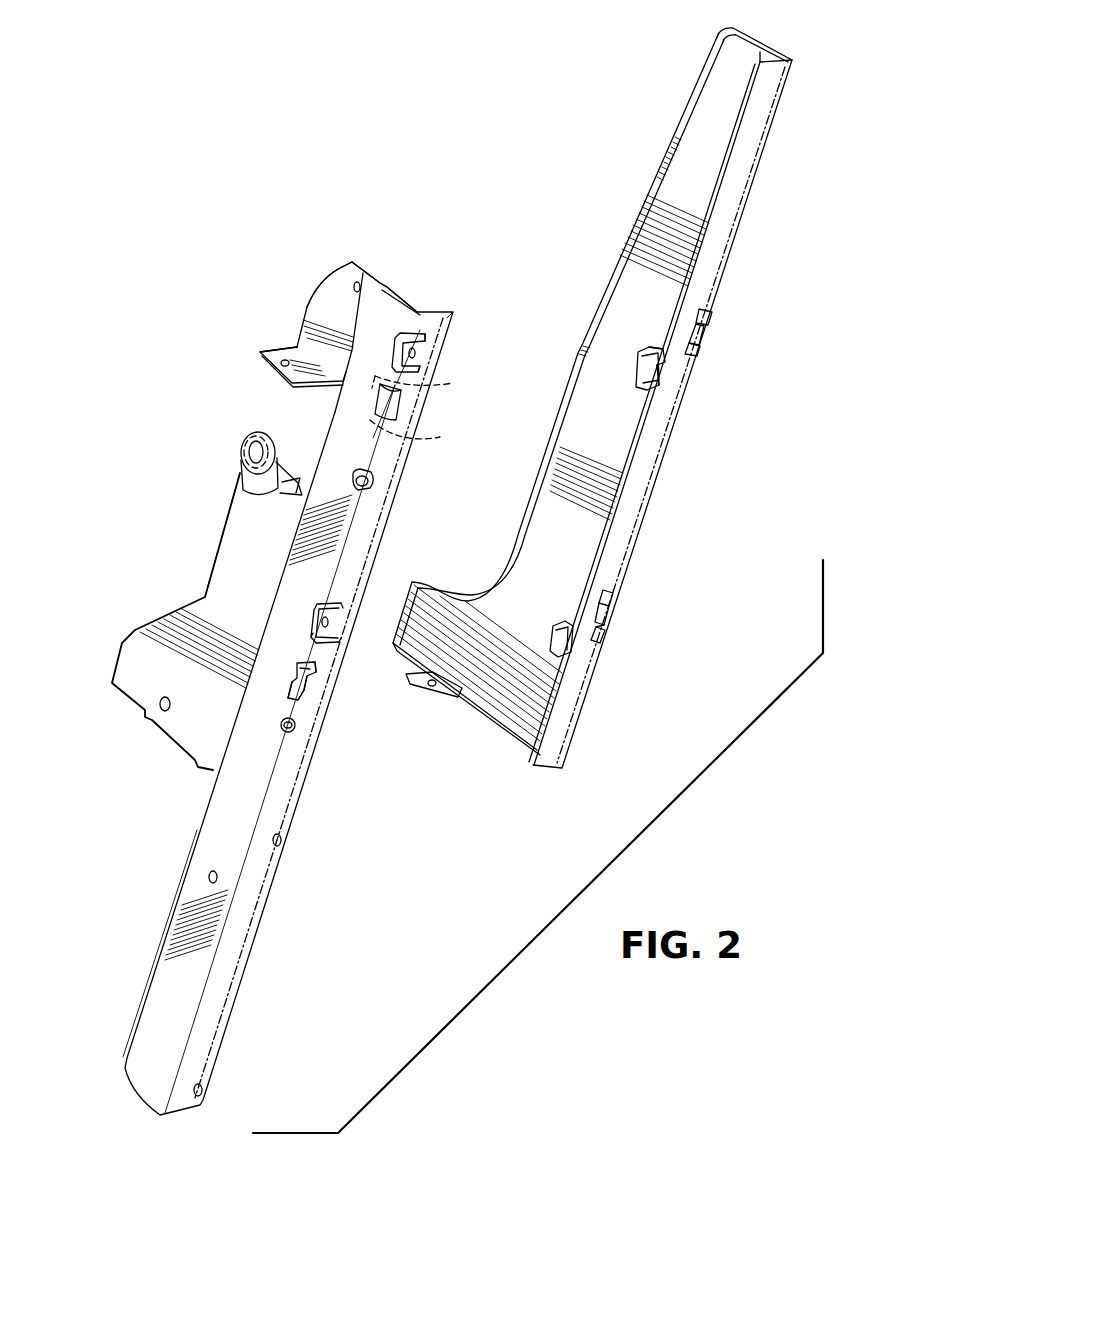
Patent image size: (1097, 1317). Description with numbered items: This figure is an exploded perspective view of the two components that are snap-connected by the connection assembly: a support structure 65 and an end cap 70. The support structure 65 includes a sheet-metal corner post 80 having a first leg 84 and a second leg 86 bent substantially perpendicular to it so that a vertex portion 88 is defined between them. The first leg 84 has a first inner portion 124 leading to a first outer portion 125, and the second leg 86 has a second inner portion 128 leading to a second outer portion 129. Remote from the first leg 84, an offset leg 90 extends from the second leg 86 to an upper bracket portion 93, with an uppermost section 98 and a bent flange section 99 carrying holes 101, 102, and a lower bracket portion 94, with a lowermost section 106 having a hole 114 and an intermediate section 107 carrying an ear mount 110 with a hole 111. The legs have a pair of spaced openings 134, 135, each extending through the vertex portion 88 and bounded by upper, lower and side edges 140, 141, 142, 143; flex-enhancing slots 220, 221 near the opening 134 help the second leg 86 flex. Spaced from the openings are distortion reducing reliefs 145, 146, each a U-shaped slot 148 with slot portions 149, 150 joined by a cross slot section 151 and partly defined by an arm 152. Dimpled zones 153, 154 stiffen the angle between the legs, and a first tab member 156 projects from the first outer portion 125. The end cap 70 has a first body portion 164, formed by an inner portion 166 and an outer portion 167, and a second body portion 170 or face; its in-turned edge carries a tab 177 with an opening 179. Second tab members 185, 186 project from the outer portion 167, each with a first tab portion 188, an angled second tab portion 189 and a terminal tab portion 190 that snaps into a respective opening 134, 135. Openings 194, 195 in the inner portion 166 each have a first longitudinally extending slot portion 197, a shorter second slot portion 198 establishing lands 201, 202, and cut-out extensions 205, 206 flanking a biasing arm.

The support structure 65 is at (354, 243).
The end cap 70 is at (780, 143).
The corner post 80 is at (405, 294).
The first leg 84 is at (370, 537).
The second leg 86 is at (212, 845).
The vertex portion 88 is at (288, 785).
The offset leg 90 is at (380, 282).
The upper bracket portion 93 is at (300, 307).
The lower bracket portion 94 is at (168, 605).
The uppermost section 98 is at (340, 307).
The bent flange section 99 is at (288, 356).
The hole 101 is at (360, 280).
The hole 102 is at (273, 372).
The lowermost section 106 is at (140, 667).
The intermediate section 107 is at (232, 568).
The ear mount 110 is at (243, 470).
The hole 111 is at (247, 452).
The hole 114 is at (165, 713).
The first inner portion 124 is at (375, 485).
The first outer portion 125 is at (413, 440).
The second inner portion 128 is at (372, 438).
The second outer portion 129 is at (292, 482).
The opening 134 is at (398, 408).
The opening 135 is at (312, 685).
The upper edge 140 is at (297, 667).
The lower edge 141 is at (305, 692).
The side edge 142 is at (293, 688).
The side edge 143 is at (318, 668).
The distortion reducing relief 145 is at (420, 326).
The distortion reducing relief 146 is at (345, 610).
The U-shaped slot 148 is at (337, 407).
The slot portion 149 is at (347, 595).
The slot portion 150 is at (337, 637).
The cross slot section 151 is at (312, 615).
The arm 152 is at (440, 337).
The dimpled zone 153 is at (372, 512).
The dimpled zone 154 is at (296, 728).
The first tab member 156 is at (447, 352).
The first body portion 164 is at (740, 173).
The inner portion 166 is at (740, 210).
The outer portion 167 is at (703, 252).
The second body portion 170 is at (706, 138).
The tab 177 is at (447, 697).
The opening 179 is at (430, 692).
The second tab member 185 is at (642, 397).
The second tab member 186 is at (568, 618).
The first tab portion 188 is at (648, 368).
The second tab portion 189 is at (655, 365).
The terminal tab portion 190 is at (643, 357).
The opening 194 is at (709, 340).
The opening 195 is at (617, 614).
The first longitudinally extending slot portion 197 is at (702, 314).
The second longitudinally extending slot portion 198 is at (702, 352).
The land 201 is at (612, 595).
The land 202 is at (605, 642).
The cut-out extension 205 is at (605, 590).
The cut-out extension 206 is at (598, 630).
The slot 220 is at (429, 383).
The slot 221 is at (424, 434).